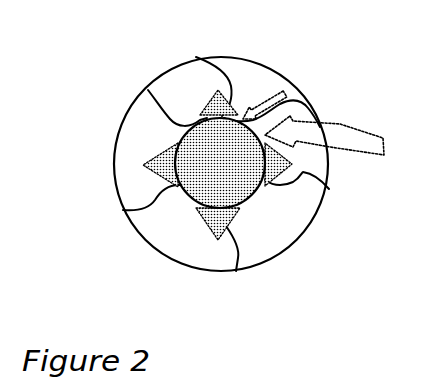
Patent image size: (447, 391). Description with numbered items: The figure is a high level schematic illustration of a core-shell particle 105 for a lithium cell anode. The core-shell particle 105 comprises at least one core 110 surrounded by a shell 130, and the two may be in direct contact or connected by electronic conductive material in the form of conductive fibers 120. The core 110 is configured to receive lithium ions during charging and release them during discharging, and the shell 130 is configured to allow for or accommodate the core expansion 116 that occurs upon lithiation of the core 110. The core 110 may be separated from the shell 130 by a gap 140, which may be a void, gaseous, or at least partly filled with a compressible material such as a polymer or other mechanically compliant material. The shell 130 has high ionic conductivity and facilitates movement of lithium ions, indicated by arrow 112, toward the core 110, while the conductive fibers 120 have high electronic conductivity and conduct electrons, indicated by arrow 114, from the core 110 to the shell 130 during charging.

The core-shell particle 105 is at (97, 44).
The core 110 is at (240, 182).
The arrow indicating lithium ion movement 112 is at (347, 131).
The arrow indicating electron movement 114 is at (265, 100).
The core expansion 116 is at (303, 172).
The conductive fibers 120 is at (155, 205).
The shell 130 is at (332, 163).
The gap 140 is at (175, 237).